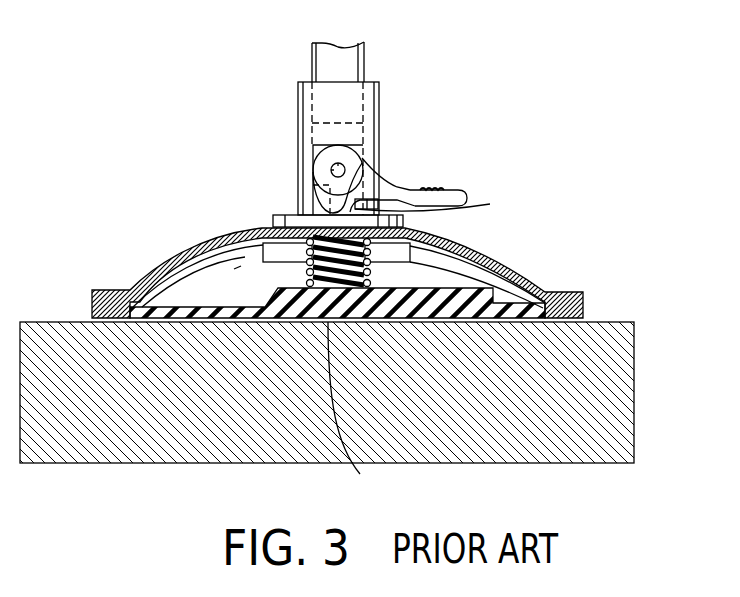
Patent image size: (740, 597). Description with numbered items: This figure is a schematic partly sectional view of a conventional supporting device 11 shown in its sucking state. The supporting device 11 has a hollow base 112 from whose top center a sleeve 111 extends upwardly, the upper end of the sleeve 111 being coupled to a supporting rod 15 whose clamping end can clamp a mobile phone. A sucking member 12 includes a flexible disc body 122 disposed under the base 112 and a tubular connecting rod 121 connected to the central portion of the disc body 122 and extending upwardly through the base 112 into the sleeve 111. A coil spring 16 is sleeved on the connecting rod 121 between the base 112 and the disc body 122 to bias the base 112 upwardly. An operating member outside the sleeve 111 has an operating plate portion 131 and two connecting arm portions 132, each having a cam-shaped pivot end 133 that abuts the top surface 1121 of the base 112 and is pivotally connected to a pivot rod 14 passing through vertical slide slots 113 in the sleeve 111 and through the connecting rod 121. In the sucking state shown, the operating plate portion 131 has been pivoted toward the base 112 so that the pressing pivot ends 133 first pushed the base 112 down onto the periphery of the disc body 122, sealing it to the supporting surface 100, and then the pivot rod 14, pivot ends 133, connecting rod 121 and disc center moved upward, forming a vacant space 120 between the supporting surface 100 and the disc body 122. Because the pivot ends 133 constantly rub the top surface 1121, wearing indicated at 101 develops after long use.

The supporting device 11 is at (380, 118).
The sucking member 12 is at (384, 242).
The pivot rod 14 is at (332, 167).
The supporting rod 15 is at (342, 40).
The coil spring 16 is at (368, 283).
The supporting surface 100 is at (606, 322).
The wearing of the top surface 101 is at (458, 209).
The sleeve 111 is at (298, 95).
The hollow base 112 is at (157, 268).
The vertical slide slot 113 is at (308, 180).
The vacant space 120 is at (353, 413).
The tubular connecting rod 121 is at (363, 254).
The flexible disc body 122 is at (557, 292).
The operating plate portion 131 is at (433, 197).
The connecting arm portion 132 is at (444, 159).
The pivot end 133 is at (375, 185).
The top surface 1121 is at (285, 215).